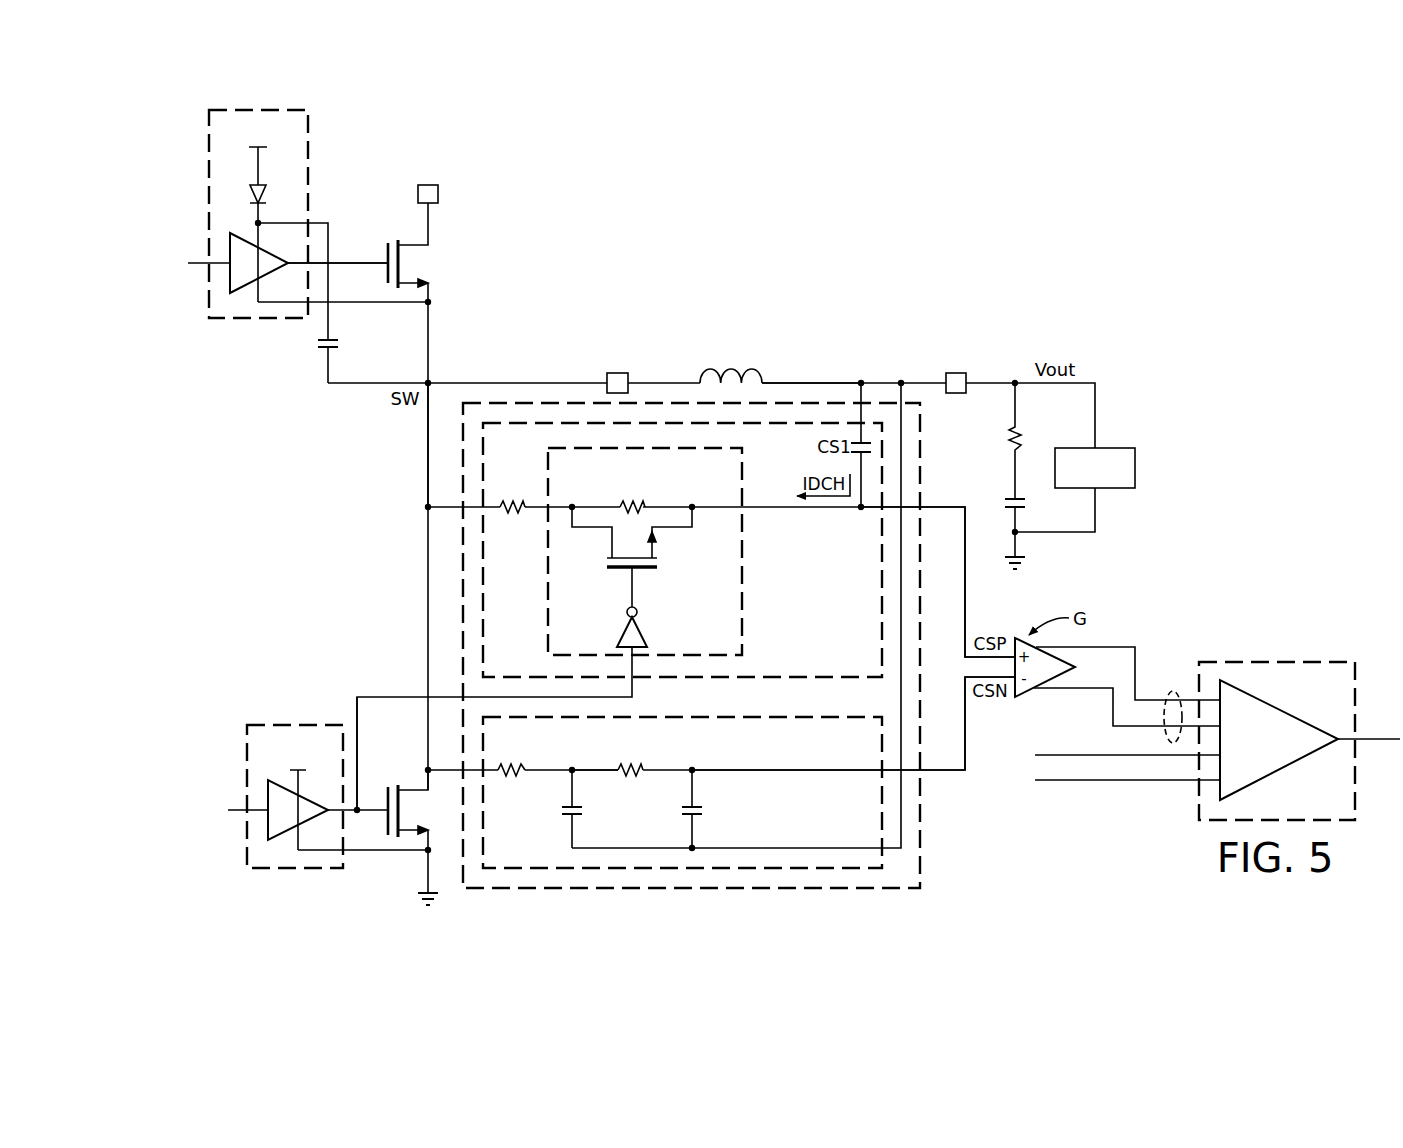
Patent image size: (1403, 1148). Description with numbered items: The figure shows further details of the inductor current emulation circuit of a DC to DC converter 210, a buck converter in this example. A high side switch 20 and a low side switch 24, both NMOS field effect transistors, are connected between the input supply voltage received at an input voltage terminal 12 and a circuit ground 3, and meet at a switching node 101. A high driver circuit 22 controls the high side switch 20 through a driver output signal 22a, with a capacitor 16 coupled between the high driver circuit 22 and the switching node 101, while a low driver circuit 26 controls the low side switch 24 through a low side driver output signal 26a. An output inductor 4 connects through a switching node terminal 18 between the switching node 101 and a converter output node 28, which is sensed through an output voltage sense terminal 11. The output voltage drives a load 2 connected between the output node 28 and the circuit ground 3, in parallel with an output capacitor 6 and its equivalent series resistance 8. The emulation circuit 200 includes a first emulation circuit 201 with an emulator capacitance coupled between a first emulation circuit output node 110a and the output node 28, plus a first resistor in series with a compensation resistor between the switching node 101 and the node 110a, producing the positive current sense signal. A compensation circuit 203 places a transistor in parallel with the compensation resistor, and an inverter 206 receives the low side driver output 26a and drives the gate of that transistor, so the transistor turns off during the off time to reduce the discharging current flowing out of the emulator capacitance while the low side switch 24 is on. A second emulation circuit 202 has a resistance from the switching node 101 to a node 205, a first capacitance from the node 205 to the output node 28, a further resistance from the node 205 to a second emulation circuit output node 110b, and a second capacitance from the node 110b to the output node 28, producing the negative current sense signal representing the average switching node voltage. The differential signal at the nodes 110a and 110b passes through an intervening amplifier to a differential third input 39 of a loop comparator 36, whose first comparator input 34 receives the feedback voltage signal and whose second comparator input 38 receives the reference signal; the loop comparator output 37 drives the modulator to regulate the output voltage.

The DC to DC converter 210 is at (958, 171).
The high driver circuit 22 is at (208, 213).
The driver output signal 22a is at (368, 262).
The high side switch 20 is at (386, 280).
The input voltage terminal 12 is at (418, 195).
The bootstrap capacitor 16 is at (318, 345).
The switching node terminal 18 is at (618, 372).
The output inductor 4 is at (724, 366).
The converter output node 28 is at (812, 381).
The output voltage sense terminal 11 is at (956, 372).
The equivalent series resistance 8 is at (1022, 432).
The output capacitor 6 is at (1026, 503).
The load 2 is at (1138, 468).
The circuit ground 3 is at (1027, 560).
The switching node 101 is at (427, 463).
The inductor current emulation circuit 200 is at (922, 837).
The first emulation circuit 201 is at (682, 550).
The compensation circuit 203 is at (746, 579).
The inverter 206 is at (641, 632).
The second emulation circuit 202 is at (682, 792).
The node 205 is at (590, 769).
The first emulation circuit output node 110a is at (948, 507).
The second emulation circuit output node 110b is at (943, 772).
The low driver circuit 26 is at (246, 821).
The low side driver output signal 26a is at (357, 712).
The low side switch 24 is at (382, 793).
The third input 39 is at (1169, 695).
The first comparator input 34 is at (1082, 755).
The second comparator input 38 is at (1083, 782).
The loop comparator 36 is at (1303, 661).
The loop comparator output 37 is at (1370, 740).